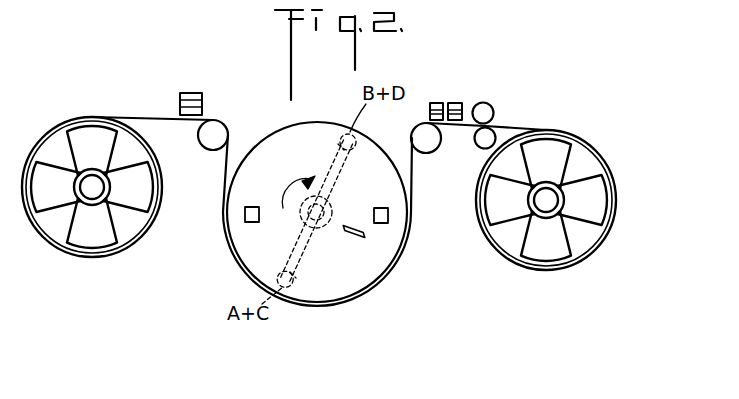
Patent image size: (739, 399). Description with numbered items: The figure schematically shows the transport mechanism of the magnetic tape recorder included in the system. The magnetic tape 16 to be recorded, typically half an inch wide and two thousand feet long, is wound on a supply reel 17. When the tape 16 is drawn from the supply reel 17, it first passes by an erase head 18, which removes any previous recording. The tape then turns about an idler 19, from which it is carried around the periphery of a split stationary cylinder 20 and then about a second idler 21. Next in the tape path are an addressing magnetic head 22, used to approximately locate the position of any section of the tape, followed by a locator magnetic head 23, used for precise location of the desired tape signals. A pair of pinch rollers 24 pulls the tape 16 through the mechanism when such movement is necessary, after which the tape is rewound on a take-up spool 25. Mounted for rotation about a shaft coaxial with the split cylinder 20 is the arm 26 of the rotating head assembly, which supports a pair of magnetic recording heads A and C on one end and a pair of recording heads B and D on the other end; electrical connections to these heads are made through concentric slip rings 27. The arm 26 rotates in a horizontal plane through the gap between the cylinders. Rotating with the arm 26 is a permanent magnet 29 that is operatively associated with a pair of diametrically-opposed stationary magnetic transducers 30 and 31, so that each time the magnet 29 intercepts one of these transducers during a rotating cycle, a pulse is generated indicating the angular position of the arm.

The magnetic tape 16 is at (137, 117).
The supply reel 17 is at (115, 236).
The erase head 18 is at (181, 93).
The idler 19 is at (215, 141).
The split stationary cylinder 20 is at (313, 122).
The idler 21 is at (426, 153).
The addressing magnetic head 22 is at (437, 103).
The locator magnetic head 23 is at (460, 103).
The pinch rollers 24 is at (493, 109).
The take-up spool 25 is at (599, 163).
The arm 26 is at (306, 250).
The concentric slip rings 27 is at (336, 208).
The permanent magnet 29 is at (365, 237).
The stationary magnetic transducer 30 is at (248, 220).
The stationary magnetic transducer 31 is at (388, 223).